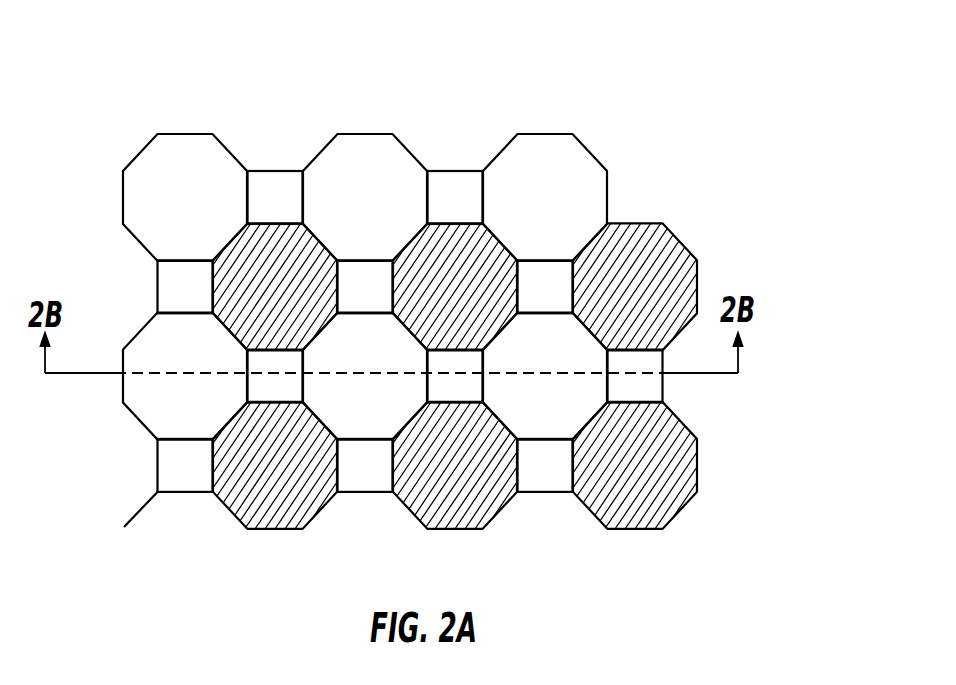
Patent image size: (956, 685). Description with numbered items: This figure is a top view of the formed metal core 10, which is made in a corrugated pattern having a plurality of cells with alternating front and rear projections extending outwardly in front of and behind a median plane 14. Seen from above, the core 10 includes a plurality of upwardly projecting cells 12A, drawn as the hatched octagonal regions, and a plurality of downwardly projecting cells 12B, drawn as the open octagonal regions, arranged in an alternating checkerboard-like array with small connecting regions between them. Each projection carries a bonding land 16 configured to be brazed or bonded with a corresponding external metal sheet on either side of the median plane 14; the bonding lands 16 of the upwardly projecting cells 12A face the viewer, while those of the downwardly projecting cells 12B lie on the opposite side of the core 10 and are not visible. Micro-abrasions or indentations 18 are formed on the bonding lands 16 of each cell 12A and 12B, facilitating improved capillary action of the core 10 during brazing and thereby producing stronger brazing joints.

The formed metal core 10 is at (619, 62).
The upwardly projecting cells 12A is at (489, 374).
The downwardly projecting cells 12B is at (590, 150).
The median plane 14 is at (273, 178).
The bonding land 16 is at (669, 476).
The micro-abrasions 18 is at (664, 504).